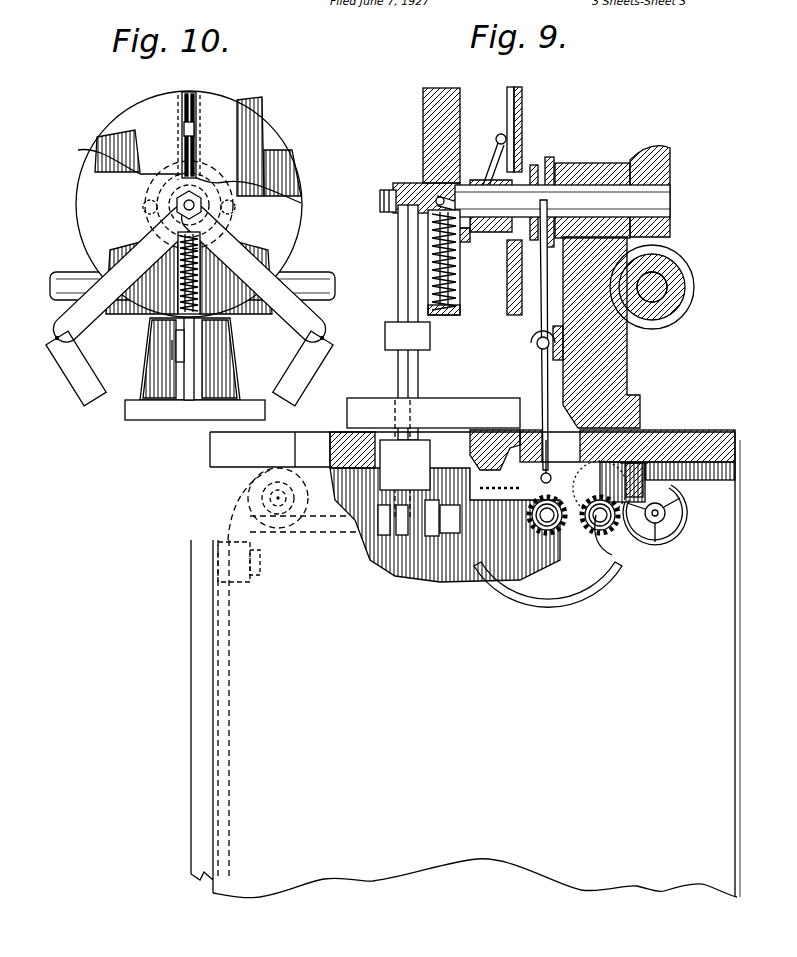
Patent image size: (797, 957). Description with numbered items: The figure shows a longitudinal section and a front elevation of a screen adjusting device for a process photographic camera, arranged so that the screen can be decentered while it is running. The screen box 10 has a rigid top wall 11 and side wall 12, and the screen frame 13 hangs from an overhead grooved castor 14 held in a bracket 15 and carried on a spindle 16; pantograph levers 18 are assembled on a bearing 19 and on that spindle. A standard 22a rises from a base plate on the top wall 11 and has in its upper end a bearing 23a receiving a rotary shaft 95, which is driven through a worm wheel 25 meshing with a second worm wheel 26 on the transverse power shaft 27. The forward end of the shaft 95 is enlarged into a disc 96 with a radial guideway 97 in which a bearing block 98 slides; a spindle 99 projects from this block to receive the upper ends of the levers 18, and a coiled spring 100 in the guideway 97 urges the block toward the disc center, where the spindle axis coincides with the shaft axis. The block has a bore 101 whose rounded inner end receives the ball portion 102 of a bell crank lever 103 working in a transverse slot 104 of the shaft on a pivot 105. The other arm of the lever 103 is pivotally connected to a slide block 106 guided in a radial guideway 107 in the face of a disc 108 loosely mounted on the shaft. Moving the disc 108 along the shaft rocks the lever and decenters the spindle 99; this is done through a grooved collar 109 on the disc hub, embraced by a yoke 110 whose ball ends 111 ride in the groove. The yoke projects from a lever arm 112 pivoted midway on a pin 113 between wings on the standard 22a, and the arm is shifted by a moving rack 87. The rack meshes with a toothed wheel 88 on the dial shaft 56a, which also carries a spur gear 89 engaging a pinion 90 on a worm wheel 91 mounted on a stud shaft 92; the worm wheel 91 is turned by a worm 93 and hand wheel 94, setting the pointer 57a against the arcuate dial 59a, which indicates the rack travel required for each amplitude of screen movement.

In FIG. 9, the screen box 10 is at (475, 766).
In FIG. 9, the top wall 11 is at (684, 428).
In FIG. 9, the side wall 12 is at (742, 628).
In FIG. 9, the screen frame 13 is at (190, 590).
In FIG. 9, the grooved castor 14 is at (256, 484).
In FIG. 9, the bracket 15 is at (232, 518).
In FIG. 9, the spindle 16 is at (322, 530).
In FIG. 10, the pantograph lever 18 is at (122, 252).
In FIG. 9, the pantograph lever 18 is at (398, 278).
In FIG. 9, the bearing 19 is at (385, 330).
In FIG. 10, the standard 22a is at (236, 330).
In FIG. 9, the standard 22a is at (625, 350).
In FIG. 9, the bearing 23a is at (590, 165).
In FIG. 9, the worm wheel 25 is at (680, 250).
In FIG. 9, the second worm wheel 26 is at (676, 308).
In FIG. 10, the power shaft 27 is at (332, 270).
In FIG. 9, the power shaft 27 is at (668, 288).
In FIG. 9, the dial shaft 56a is at (540, 548).
In FIG. 9, the pointer 57a is at (592, 548).
In FIG. 9, the arcuate dial 59a is at (530, 600).
In FIG. 9, the rack 87 is at (500, 440).
In FIG. 9, the toothed wheel 88 is at (478, 556).
In FIG. 9, the spur gear 89 is at (548, 540).
In FIG. 9, the pinion 90 is at (605, 530).
In FIG. 9, the worm wheel 91 is at (622, 492).
In FIG. 9, the stud shaft 92 is at (612, 556).
In FIG. 9, the worm 93 is at (686, 490).
In FIG. 9, the hand wheel 94 is at (655, 545).
In FIG. 9, the rotary shaft 95 is at (670, 197).
In FIG. 10, the disc 96 is at (292, 240).
In FIG. 9, the disc 96 is at (423, 124).
In FIG. 10, the radial slot or guideway 97 is at (200, 292).
In FIG. 9, the radial slot or guideway 97 is at (460, 297).
In FIG. 9, the bearing block 98 is at (418, 187).
In FIG. 10, the spindle 99 is at (176, 203).
In FIG. 9, the spindle 99 is at (380, 182).
In FIG. 10, the coiled spring 100 is at (183, 272).
In FIG. 9, the coiled spring 100 is at (456, 265).
In FIG. 9, the bore 101 is at (450, 190).
In FIG. 9, the ball portion 102 is at (462, 226).
In FIG. 10, the bell crank lever 103 is at (218, 176).
In FIG. 9, the bell crank lever 103 is at (490, 145).
In FIG. 9, the transverse slot 104 is at (472, 238).
In FIG. 9, the pivot 105 is at (506, 205).
In FIG. 10, the slide block 106 is at (183, 141).
In FIG. 9, the slide block 106 is at (499, 135).
In FIG. 10, the radial slot or guideway 107 is at (194, 104).
In FIG. 9, the radial slot or guideway 107 is at (507, 100).
In FIG. 10, the disc 108 is at (112, 112).
In FIG. 9, the disc 108 is at (522, 103).
In FIG. 9, the grooved collar 109 is at (547, 158).
In FIG. 10, the yoke 110 is at (225, 222).
In FIG. 9, the yoke 110 is at (535, 262).
In FIG. 9, the ball end 111 is at (556, 470).
In FIG. 10, the lever arm 112 is at (196, 385).
In FIG. 9, the lever arm 112 is at (541, 382).
In FIG. 10, the pin 113 is at (175, 348).
In FIG. 9, the pin 113 is at (536, 344).